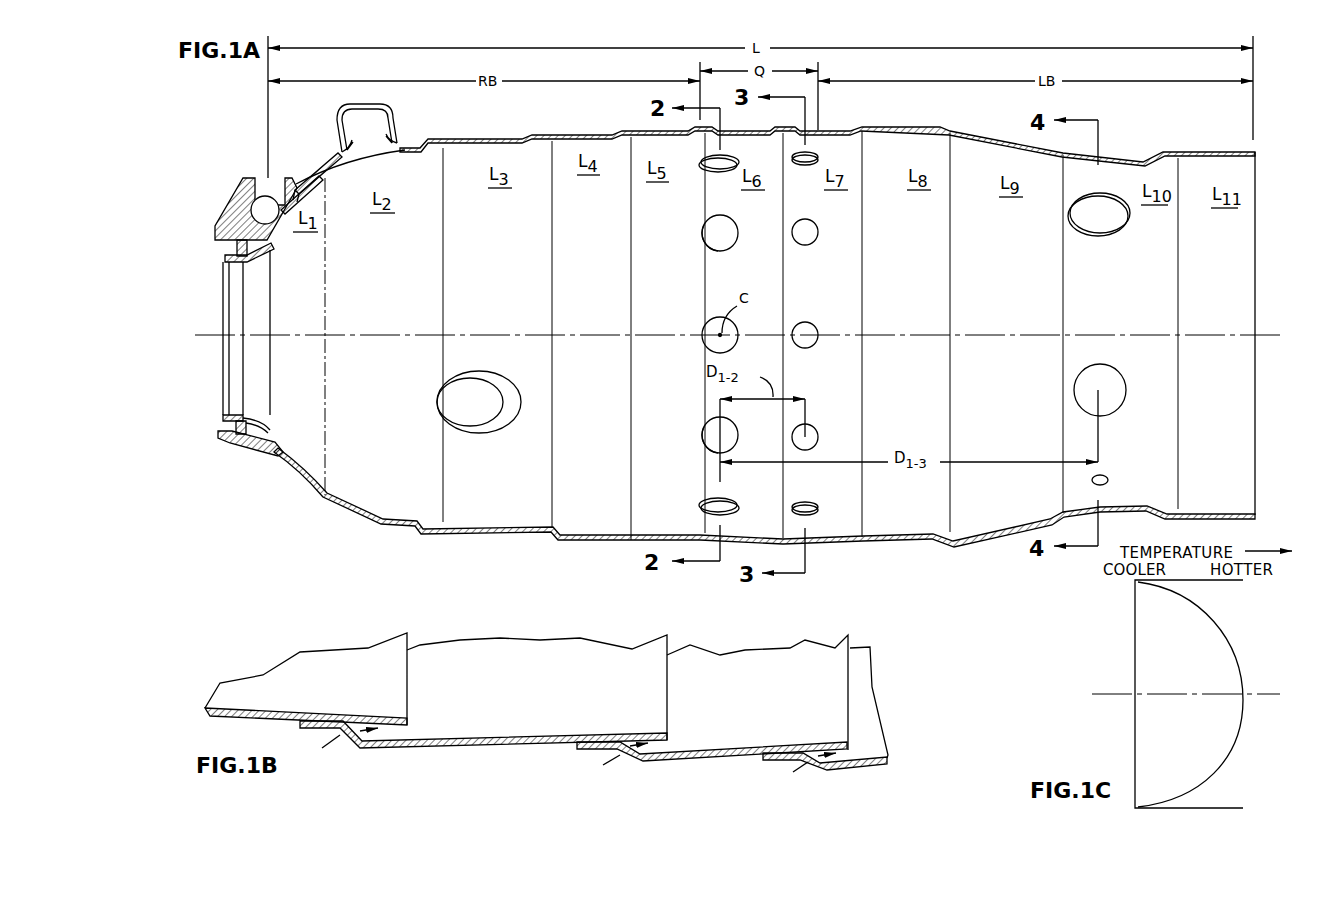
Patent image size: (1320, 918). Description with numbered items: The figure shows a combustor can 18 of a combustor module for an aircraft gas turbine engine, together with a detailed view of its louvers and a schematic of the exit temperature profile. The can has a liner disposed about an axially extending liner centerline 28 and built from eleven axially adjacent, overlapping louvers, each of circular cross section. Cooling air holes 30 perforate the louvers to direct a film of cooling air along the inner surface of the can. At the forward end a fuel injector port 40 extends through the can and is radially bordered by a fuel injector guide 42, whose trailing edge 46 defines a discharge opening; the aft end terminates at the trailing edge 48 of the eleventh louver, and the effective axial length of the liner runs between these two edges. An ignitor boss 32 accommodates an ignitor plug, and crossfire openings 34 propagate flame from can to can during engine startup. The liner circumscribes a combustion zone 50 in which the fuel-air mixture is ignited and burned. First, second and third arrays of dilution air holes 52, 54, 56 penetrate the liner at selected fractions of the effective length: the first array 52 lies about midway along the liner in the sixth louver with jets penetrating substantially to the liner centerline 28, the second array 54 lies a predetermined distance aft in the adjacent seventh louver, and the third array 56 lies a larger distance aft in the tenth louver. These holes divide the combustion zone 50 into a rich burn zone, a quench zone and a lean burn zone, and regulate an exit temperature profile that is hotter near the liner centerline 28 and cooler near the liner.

In FIG. 1A, the combustor can 18 is at (475, 535).
In FIG. 1B, the combustor can 18 is at (492, 748).
In FIG. 1A, the liner centerline 28 is at (1252, 333).
In FIG. 1C, the liner centerline 28 is at (1232, 694).
In FIG. 1B, the cooling air holes 30 is at (352, 745).
In FIG. 1A, the ignitor boss 32 is at (392, 102).
In FIG. 1A, the crossfire openings 34 is at (487, 412).
In FIG. 1A, the fuel injector port 40 is at (267, 408).
In FIG. 1A, the fuel injector guide 42 is at (268, 433).
In FIG. 1A, the trailing edge of fuel injector guide 46 is at (266, 243).
In FIG. 1A, the trailing edge of eleventh louver 48 is at (1257, 490).
In FIG. 1A, the combustion zone 50 is at (680, 299).
In FIG. 1A, the first array of dilution air holes 52 is at (724, 248).
In FIG. 1A, the second array of dilution air holes 54 is at (810, 240).
In FIG. 1A, the third array of dilution air holes 56 is at (1122, 226).